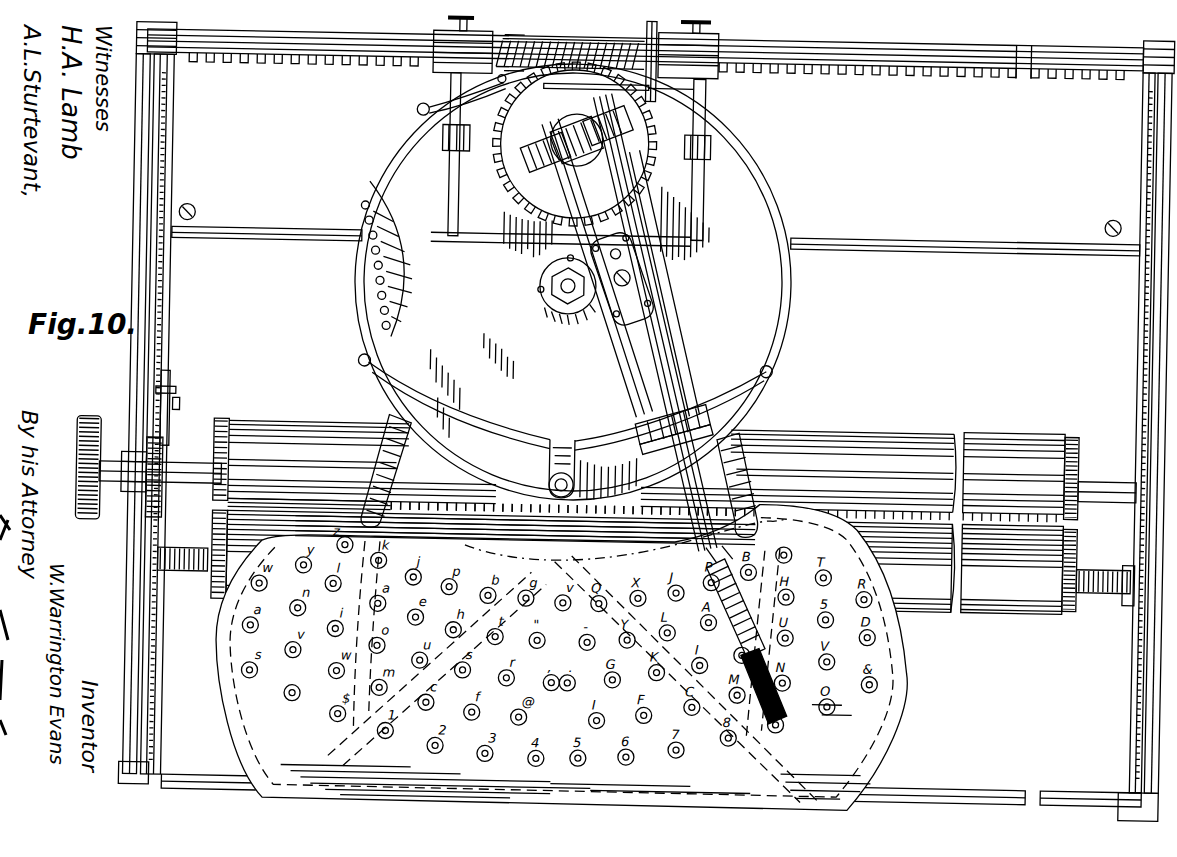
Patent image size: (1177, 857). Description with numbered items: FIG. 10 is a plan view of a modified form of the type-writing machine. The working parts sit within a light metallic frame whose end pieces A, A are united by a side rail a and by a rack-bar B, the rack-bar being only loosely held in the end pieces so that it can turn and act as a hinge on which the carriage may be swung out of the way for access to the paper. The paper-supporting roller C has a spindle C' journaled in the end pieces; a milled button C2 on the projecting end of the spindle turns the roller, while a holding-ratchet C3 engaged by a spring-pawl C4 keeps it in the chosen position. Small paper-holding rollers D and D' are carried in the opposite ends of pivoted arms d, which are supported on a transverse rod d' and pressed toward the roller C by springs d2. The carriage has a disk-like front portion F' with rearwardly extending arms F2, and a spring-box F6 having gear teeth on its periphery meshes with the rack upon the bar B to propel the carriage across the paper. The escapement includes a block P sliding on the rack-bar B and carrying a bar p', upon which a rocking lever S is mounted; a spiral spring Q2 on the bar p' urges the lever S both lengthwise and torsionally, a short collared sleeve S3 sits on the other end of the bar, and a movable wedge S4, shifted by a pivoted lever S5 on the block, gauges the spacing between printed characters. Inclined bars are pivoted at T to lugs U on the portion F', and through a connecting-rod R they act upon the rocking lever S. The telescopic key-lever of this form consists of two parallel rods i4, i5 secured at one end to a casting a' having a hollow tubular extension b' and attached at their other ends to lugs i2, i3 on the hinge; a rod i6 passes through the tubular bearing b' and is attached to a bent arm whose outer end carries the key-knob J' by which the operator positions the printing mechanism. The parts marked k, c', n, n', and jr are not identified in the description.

The end pieces A is at (646, 422).
The rack-bar B is at (645, 41).
The metallic block P is at (720, 52).
The side rail a is at (651, 802).
The pivoted arms d is at (431, 250).
The transverse rod d' is at (965, 268).
The springs d2 is at (195, 575).
The paper-supporting roller C is at (585, 459).
The spindle C' is at (618, 468).
The milled button C2 is at (84, 430).
The holding-ratchet C3 is at (170, 515).
The spring-pawl C4 is at (175, 412).
The small roller D is at (644, 558).
The small roller D' is at (1021, 470).
The disk-like front portion F' is at (573, 282).
The arms F2 is at (390, 470).
The spring-box F6 is at (505, 178).
The index segment k is at (369, 258).
The lug i2 is at (534, 160).
The lug i3 is at (622, 125).
The parallel rod i4 is at (632, 369).
The parallel rod i5 is at (690, 362).
The rod i6 is at (660, 372).
The casting a' is at (686, 424).
The hollow tubular extension b' is at (676, 448).
The bracket plate c' is at (621, 289).
The bracket n is at (550, 468).
The pivot hole n' is at (547, 484).
The curved arm jr is at (475, 287).
The rocking lever S is at (658, 40).
The short sleeve S3 is at (558, 42).
The wedge S4 is at (535, 45).
The pivoted lever S5 is at (500, 42).
The spiral spring Q2 is at (595, 50).
The bar p' is at (610, 99).
The pivot T is at (441, 154).
The connecting-rod R is at (684, 160).
The lugs U is at (712, 159).
The key-knob J' is at (752, 649).